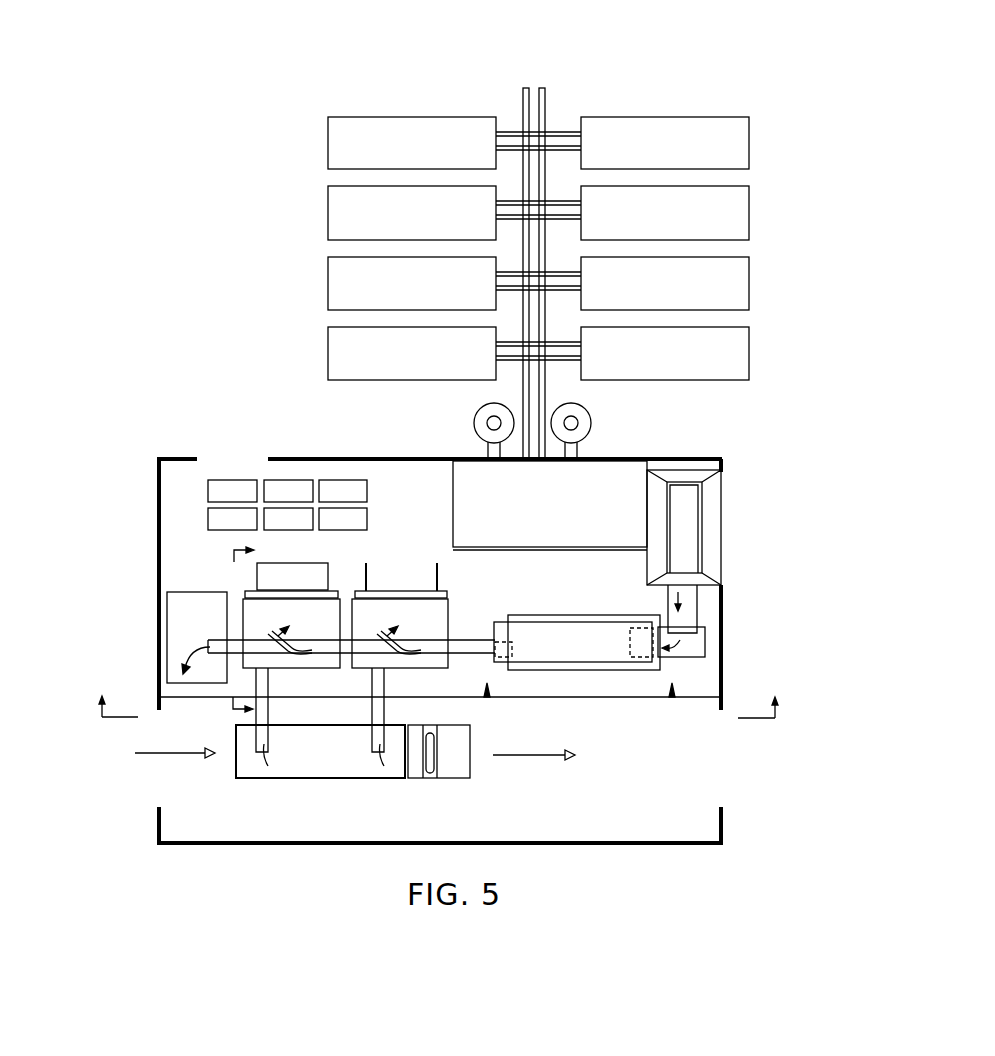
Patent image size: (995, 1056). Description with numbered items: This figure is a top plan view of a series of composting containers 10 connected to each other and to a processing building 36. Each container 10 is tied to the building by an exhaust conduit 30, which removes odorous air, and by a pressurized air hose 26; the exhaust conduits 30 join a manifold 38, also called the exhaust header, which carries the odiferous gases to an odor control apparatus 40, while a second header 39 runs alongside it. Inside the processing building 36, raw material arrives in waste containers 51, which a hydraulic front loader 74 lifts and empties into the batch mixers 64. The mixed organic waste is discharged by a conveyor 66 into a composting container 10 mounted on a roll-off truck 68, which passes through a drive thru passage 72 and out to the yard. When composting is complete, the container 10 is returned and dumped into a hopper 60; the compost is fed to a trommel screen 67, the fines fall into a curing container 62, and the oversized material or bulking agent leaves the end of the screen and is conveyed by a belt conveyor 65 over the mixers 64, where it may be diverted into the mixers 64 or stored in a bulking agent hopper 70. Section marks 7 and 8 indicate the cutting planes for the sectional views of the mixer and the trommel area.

The container 10 is at (328, 323).
The pressurized air hose 26 is at (550, 152).
The exhaust conduit 30 is at (557, 130).
The processing building 36 is at (152, 448).
The manifold 38 is at (524, 88).
The second rail 39 is at (547, 87).
The odor control apparatus 40 is at (475, 425).
The waste container 51 is at (243, 487).
The hopper 60 is at (722, 478).
The curing container 62 is at (543, 670).
The batch mixer 64 is at (252, 602).
The belt conveyor 65 is at (493, 648).
The conveyor 66 is at (265, 713).
The trommel screen 67 is at (555, 618).
The roll-off truck 68 is at (472, 782).
The bulking agent hopper 70 is at (178, 643).
The drive thru passage 72 is at (158, 738).
The hydraulic front loader 74 is at (435, 563).
The section line 7- 7 is at (242, 629).
The section line 8- 8 is at (439, 692).